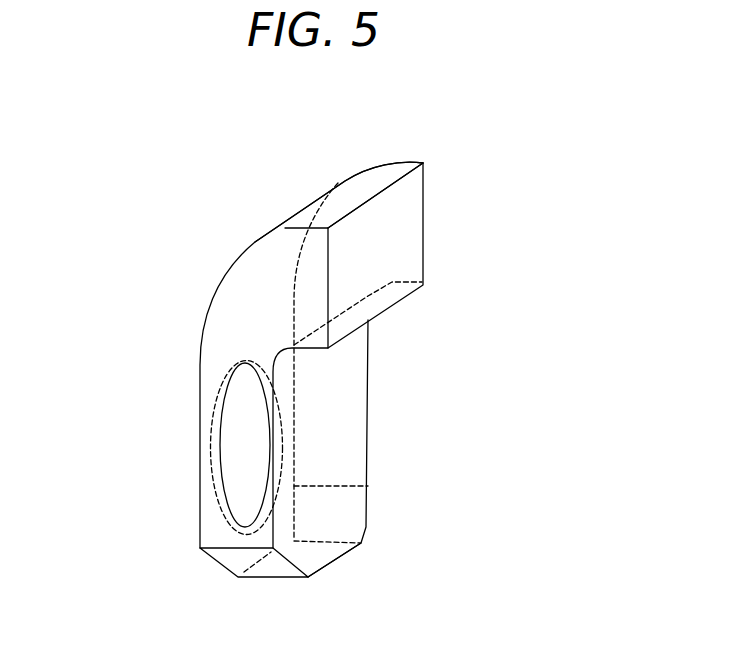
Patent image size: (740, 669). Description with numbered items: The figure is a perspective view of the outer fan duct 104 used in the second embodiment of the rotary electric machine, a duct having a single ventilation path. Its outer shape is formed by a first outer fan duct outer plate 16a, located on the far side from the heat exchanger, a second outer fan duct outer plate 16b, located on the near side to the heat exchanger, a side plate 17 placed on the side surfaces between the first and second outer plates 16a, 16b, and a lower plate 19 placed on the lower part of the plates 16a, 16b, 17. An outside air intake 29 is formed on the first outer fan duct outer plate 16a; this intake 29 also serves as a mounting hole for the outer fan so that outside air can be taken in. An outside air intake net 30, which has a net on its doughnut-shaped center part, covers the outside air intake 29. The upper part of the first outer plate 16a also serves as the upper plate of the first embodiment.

The outer fan duct 104 is at (441, 237).
The first outer fan duct outer plate 16a is at (238, 315).
The second outer fan duct outer plate 16b is at (353, 445).
The side plate 17 is at (266, 291).
The lower plate 19 is at (318, 555).
The outside air intake 29 is at (240, 450).
The outside air intake net 30 is at (212, 419).